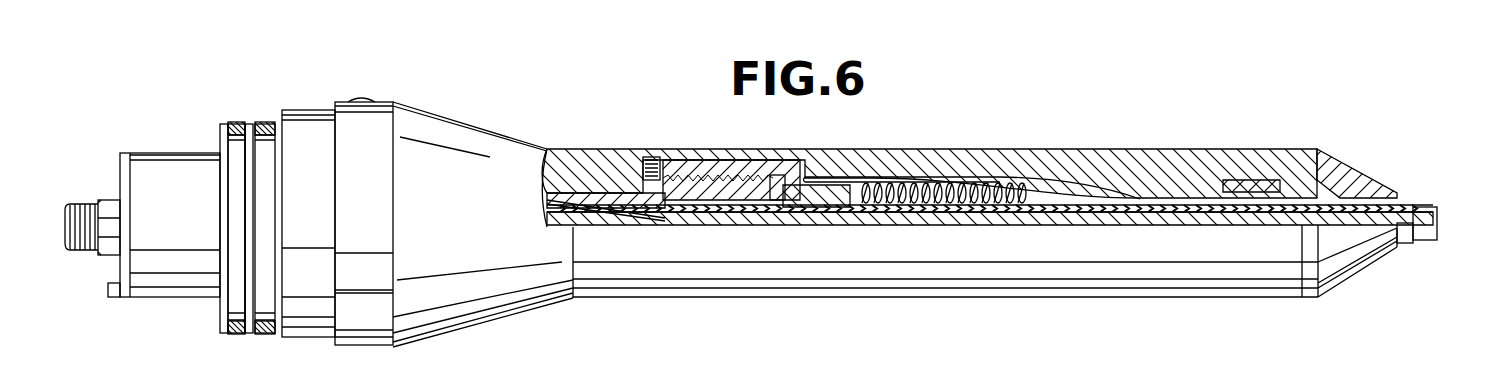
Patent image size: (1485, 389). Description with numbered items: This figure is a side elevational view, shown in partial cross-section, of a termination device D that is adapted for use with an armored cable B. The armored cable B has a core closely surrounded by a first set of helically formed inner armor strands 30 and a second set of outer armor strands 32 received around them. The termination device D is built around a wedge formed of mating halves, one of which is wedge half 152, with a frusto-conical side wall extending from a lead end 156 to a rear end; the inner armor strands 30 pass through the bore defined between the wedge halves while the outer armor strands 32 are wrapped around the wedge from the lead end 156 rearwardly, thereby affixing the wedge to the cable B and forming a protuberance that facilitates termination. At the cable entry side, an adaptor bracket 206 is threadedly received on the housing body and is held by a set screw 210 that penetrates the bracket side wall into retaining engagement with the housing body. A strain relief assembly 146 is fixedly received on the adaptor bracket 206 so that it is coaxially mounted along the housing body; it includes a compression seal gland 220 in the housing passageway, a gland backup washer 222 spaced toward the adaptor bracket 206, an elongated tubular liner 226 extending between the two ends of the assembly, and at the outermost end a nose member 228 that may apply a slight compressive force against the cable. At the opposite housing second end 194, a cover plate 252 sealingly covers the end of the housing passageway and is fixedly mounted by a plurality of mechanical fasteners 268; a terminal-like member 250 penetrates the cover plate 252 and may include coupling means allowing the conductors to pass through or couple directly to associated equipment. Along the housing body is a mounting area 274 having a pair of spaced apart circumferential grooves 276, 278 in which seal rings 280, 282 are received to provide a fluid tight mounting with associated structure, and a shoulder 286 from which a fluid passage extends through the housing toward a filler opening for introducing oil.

The housing second end 194 is at (155, 133).
The terminal-like member 250 is at (110, 202).
The cover plate 252 is at (115, 268).
The mechanical fasteners 268 is at (115, 298).
The mounting area 274 is at (247, 122).
The circumferential groove 276 is at (223, 320).
The circumferential groove 278 is at (265, 294).
The seal ring 280 is at (236, 122).
The seal ring 282 is at (262, 122).
The shoulder 286 is at (222, 132).
The strain relief assembly 146 is at (1033, 149).
The wedge half 152 is at (558, 228).
The outer armor strands 32 is at (566, 188).
The wedge lead end 156 is at (640, 216).
The inner armor strands 30 is at (697, 224).
The adaptor bracket 206 is at (725, 172).
The set screw 210 is at (657, 170).
The gland backup washer 222 is at (807, 168).
The compression seal gland 220 is at (783, 226).
The tubular liner 226 is at (1033, 208).
The nose member 228 is at (1340, 162).
The armored cable B is at (1425, 244).
The termination device D is at (957, 131).